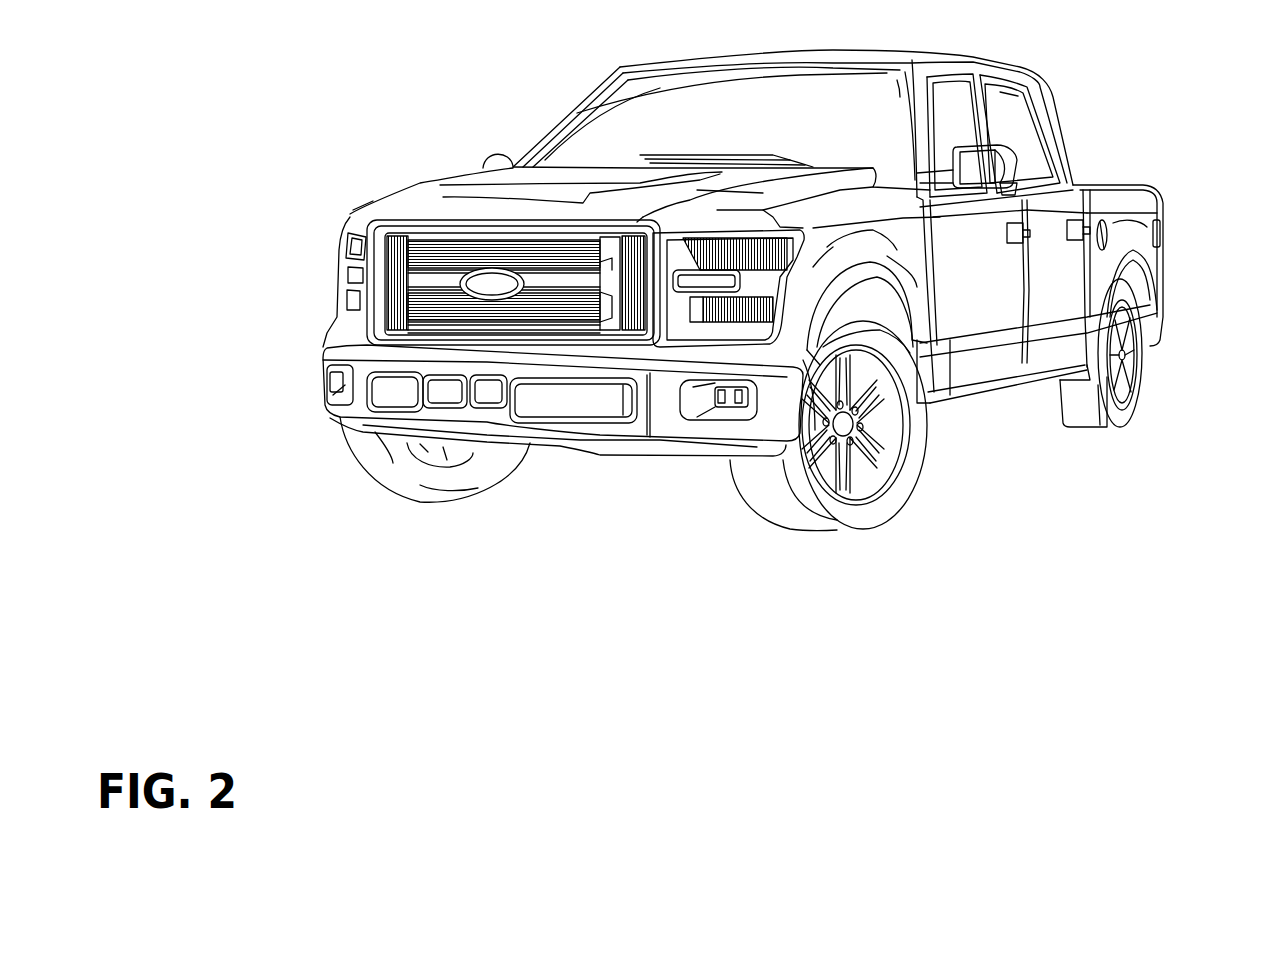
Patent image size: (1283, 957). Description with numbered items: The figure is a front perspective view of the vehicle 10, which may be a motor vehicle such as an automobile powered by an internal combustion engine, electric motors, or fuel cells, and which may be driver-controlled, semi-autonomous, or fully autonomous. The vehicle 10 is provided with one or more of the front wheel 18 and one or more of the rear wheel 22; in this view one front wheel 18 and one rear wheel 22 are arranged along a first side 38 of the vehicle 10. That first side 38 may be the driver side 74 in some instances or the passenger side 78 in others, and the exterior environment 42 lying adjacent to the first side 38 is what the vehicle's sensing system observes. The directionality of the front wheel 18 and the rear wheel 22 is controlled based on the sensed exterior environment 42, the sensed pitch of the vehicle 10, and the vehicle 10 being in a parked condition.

The vehicle 10 is at (345, 128).
The front wheel 18 is at (406, 478).
The rear wheel 22 is at (1090, 403).
The first side 38 is at (425, 176).
The exterior environment 42 is at (1261, 220).
The driver side 74 is at (1003, 277).
The passenger side 78 is at (533, 137).